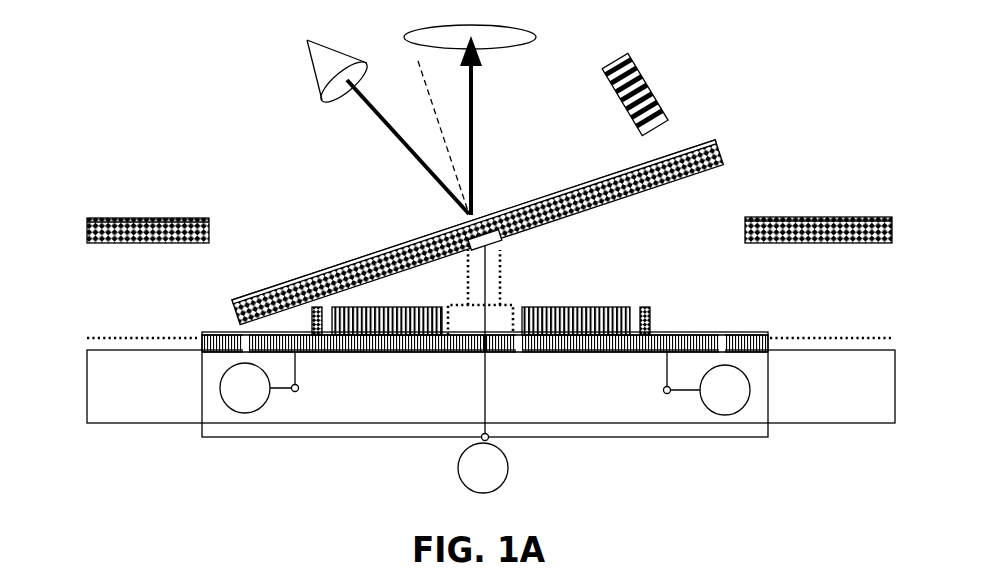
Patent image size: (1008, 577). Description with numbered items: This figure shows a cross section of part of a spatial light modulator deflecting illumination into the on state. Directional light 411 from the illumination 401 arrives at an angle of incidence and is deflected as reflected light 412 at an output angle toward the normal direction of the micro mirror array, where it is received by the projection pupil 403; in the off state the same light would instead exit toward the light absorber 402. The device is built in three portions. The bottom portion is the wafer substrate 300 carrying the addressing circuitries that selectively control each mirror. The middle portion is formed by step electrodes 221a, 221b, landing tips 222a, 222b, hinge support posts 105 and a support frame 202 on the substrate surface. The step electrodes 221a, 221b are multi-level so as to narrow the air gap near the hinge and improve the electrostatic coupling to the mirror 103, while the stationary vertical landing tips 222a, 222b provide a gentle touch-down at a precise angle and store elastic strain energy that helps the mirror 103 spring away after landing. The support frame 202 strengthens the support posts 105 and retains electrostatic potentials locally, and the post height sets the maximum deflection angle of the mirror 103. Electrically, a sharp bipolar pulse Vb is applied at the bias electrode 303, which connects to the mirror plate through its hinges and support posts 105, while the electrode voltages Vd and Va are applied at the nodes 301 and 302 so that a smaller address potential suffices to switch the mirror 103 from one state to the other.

The mirror 103 is at (110, 255).
The hinge support post 105 is at (508, 284).
The support frame 202 is at (197, 340).
The step electrode 221a is at (418, 356).
The step electrode 221b is at (545, 356).
The landing tip 222a is at (309, 321).
The landing tip 222b is at (660, 322).
The wafer substrate 300 is at (178, 370).
The electrode voltage node 301 is at (306, 394).
The address voltage node 302 is at (660, 391).
The bias electrode 303 is at (498, 440).
The illumination 401 is at (315, 85).
The light absorber 402 is at (657, 72).
The projection pupil 403 is at (422, 38).
The directional light 411 is at (388, 150).
The deflected light 412 is at (500, 100).